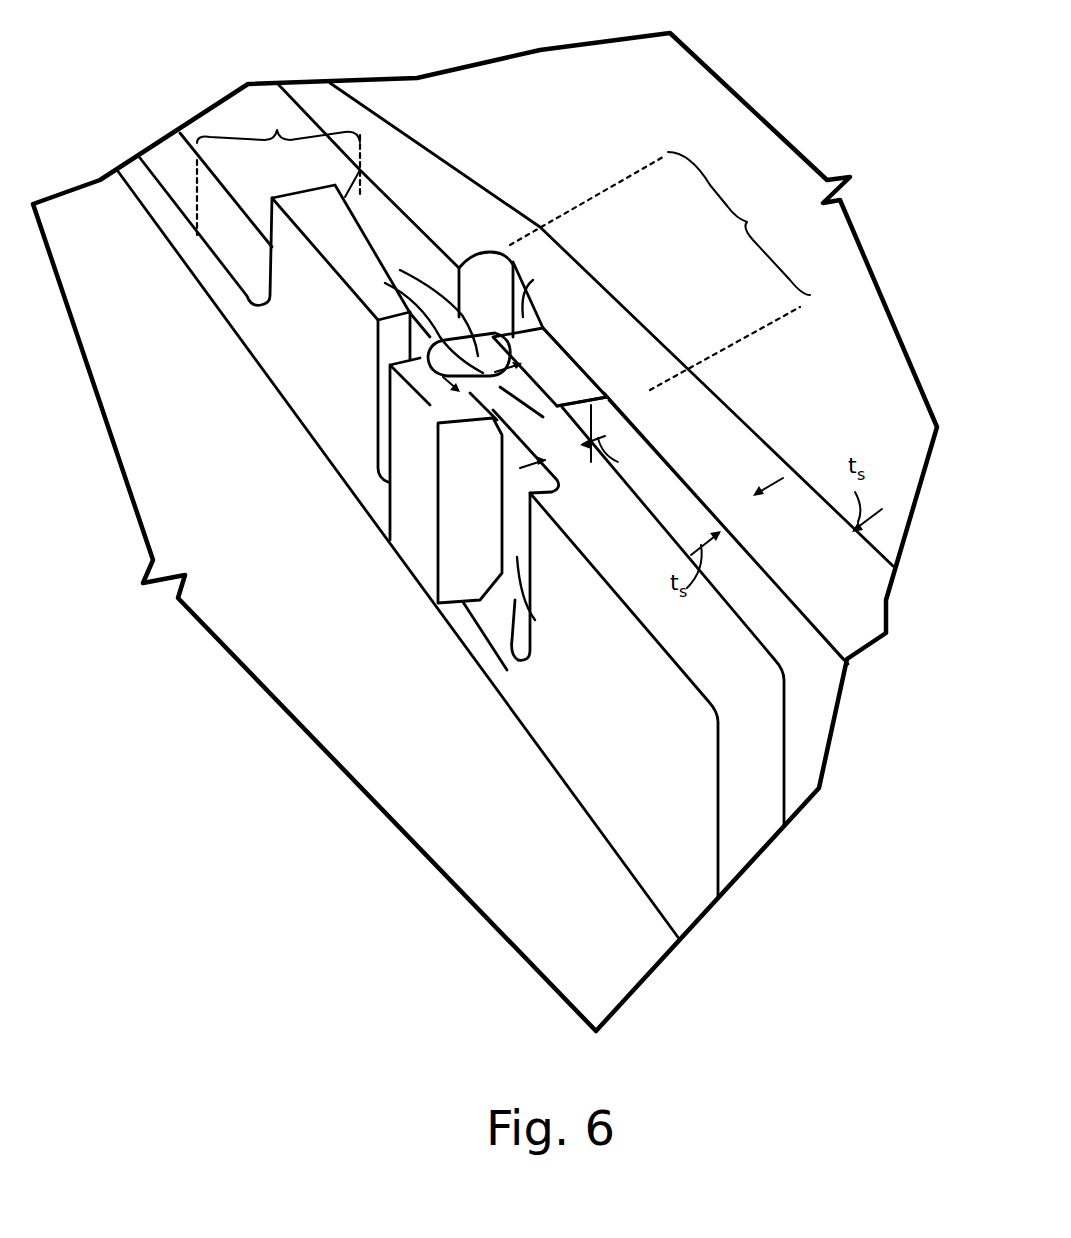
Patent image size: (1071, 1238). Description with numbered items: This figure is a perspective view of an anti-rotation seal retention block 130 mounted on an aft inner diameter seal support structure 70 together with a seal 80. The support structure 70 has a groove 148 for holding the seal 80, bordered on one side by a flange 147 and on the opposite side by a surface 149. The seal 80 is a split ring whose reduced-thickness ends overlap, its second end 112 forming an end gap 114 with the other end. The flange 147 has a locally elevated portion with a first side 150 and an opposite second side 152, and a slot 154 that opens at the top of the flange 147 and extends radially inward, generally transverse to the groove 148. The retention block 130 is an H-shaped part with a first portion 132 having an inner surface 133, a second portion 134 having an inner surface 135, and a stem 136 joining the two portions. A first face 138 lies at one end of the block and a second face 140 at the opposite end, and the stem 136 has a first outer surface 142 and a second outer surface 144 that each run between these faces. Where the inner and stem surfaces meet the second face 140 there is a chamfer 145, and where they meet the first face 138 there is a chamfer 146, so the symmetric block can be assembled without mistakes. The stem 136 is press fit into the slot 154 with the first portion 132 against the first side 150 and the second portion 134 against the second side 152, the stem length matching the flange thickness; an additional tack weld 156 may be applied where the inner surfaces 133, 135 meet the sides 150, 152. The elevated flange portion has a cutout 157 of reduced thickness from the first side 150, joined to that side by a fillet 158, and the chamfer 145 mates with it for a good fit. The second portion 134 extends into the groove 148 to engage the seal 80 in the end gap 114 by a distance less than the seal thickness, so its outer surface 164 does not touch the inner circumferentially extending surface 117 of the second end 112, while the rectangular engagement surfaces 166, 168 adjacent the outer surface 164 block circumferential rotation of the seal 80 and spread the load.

The aft inner diameter seal support structure 70 is at (853, 412).
The seal 80 is at (432, 215).
The second end 112 is at (660, 371).
The end gap 114 is at (660, 223).
The inner circumferentially extending surface 117 is at (533, 280).
The retention block 130 is at (415, 524).
The first portion 132 is at (417, 475).
The inner surface 133 is at (430, 333).
The second portion 134 is at (553, 343).
The inner surface 135 is at (598, 391).
The stem 136 is at (420, 316).
The first face 138 is at (430, 383).
The second face 140 is at (490, 603).
The first outer surface 142 is at (480, 363).
The second outer surface 144 is at (493, 400).
The chamfer 145 is at (503, 581).
The chamfer 146 is at (432, 425).
The flange 147 is at (586, 736).
The groove 148 is at (278, 171).
The surface 149 is at (450, 157).
The first side 150 is at (292, 267).
The second side 152 is at (360, 170).
The slot 154 is at (540, 420).
The tack weld 156 is at (504, 496).
The cutout 157 is at (540, 613).
The fillet 158 is at (493, 603).
The outer surface 164 is at (574, 354).
The engagement surface 166 is at (494, 326).
The engagement surface 168 is at (578, 414).